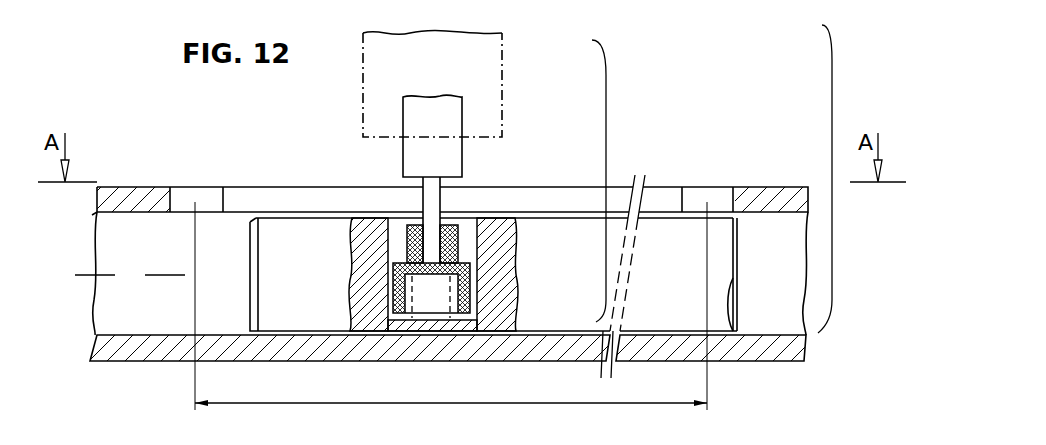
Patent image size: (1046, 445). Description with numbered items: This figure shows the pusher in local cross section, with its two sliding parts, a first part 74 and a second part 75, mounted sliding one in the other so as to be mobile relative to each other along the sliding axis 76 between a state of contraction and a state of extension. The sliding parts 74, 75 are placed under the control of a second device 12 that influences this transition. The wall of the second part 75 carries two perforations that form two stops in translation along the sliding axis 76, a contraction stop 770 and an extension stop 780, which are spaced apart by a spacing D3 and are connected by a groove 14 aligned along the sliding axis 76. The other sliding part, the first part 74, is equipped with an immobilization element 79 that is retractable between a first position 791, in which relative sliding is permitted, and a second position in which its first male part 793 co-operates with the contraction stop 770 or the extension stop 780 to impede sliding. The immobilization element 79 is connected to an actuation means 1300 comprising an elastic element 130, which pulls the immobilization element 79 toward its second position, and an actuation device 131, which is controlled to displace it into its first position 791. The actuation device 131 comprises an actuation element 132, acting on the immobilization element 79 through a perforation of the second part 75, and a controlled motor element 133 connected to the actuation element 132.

The second device 12 is at (832, 180).
The groove 14 is at (530, 197).
The first part 74 is at (273, 249).
The second part 75 is at (133, 196).
The sliding axis 76 is at (130, 274).
The contraction stop 770 is at (223, 178).
The extension stop 780 is at (682, 178).
The immobilization element 79 is at (384, 288).
The first position 791 is at (492, 252).
The first male part 793 is at (413, 241).
The elastic element 130 is at (453, 292).
The actuation device 131 is at (500, 52).
The actuation element 132 is at (432, 198).
The motor element 133 is at (438, 118).
The actuation means 1300 is at (616, 185).
The spacing D3 is at (445, 403).